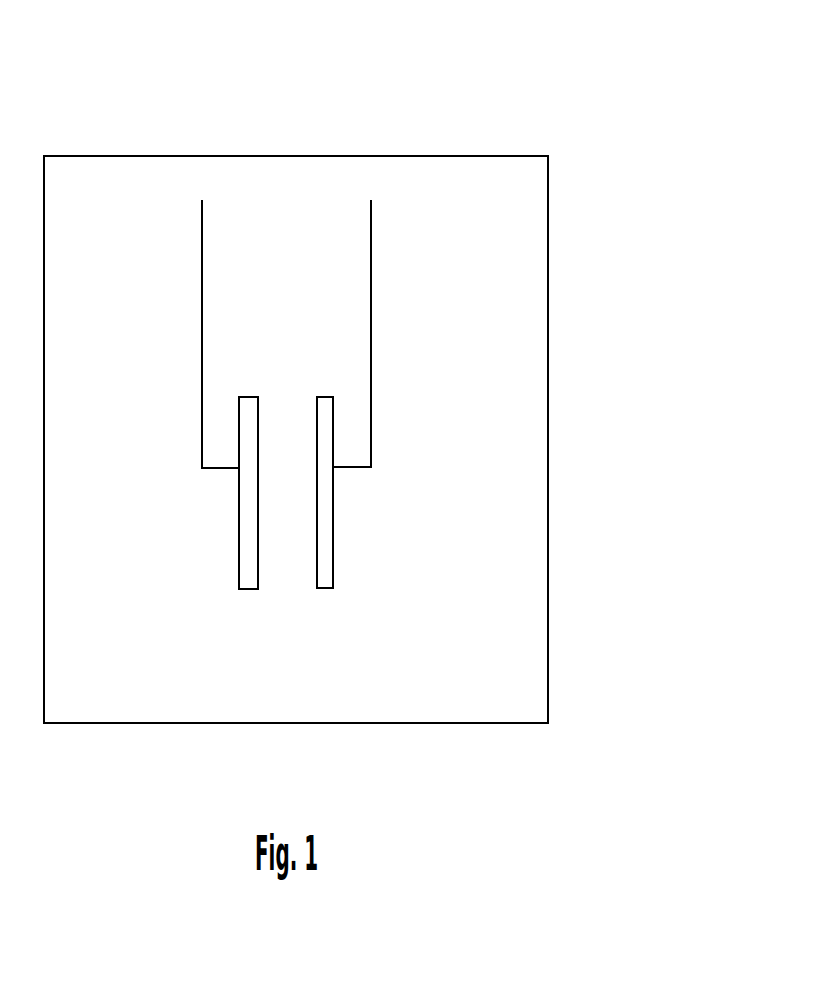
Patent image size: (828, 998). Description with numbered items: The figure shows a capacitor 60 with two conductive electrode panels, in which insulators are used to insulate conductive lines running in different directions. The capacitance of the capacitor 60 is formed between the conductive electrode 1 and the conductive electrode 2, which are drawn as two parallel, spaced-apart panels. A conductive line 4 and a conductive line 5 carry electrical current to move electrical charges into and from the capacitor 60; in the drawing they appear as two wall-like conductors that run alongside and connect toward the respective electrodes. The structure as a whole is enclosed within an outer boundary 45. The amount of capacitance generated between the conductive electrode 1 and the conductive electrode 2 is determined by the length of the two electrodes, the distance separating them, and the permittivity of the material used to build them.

The capacitor 60 is at (302, 250).
The housing 45 is at (557, 282).
The conductive line 4 is at (202, 333).
The conductive line 5 is at (371, 333).
The conductive electrode 1 is at (239, 530).
The conductive electrode 2 is at (333, 530).